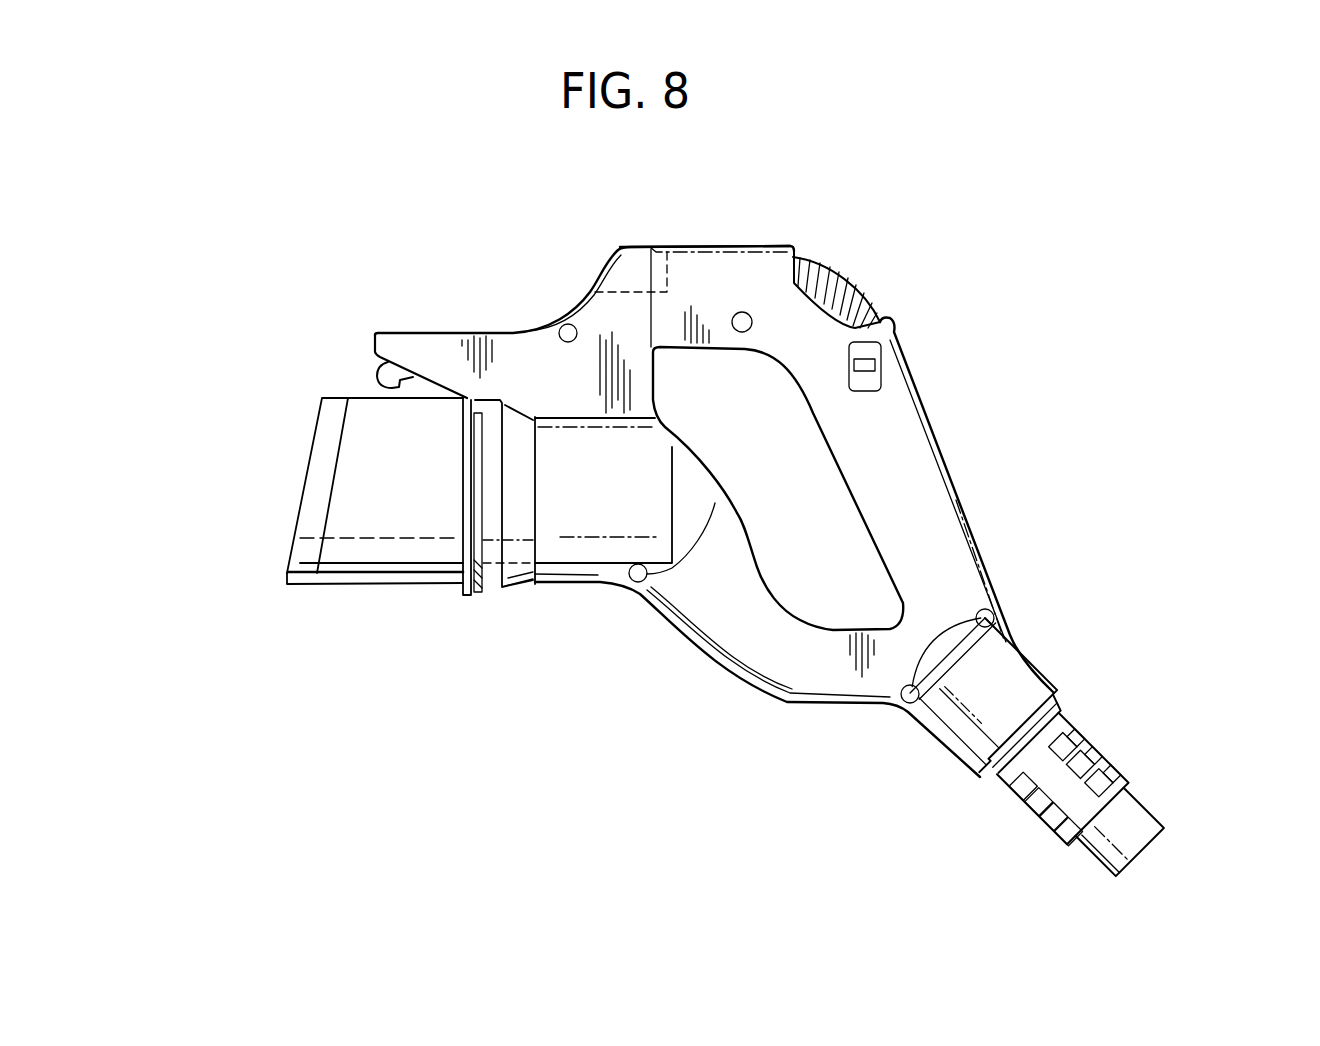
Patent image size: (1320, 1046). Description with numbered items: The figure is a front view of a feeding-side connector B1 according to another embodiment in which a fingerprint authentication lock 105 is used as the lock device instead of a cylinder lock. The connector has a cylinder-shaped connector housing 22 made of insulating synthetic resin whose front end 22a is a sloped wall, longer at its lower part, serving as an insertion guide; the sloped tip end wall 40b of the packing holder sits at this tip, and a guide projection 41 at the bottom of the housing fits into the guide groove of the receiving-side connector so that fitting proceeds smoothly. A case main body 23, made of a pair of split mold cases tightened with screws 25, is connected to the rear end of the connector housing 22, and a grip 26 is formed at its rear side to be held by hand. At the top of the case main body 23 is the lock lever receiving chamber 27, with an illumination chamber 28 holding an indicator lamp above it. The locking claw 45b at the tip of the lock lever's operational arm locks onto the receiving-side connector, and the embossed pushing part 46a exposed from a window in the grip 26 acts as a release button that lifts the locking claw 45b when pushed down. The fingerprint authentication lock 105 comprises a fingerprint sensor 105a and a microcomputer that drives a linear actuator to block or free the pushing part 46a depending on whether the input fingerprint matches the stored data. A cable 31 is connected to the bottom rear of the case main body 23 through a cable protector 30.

The feeding-side connector B1 is at (685, 183).
The lock lever receiving chamber 27 is at (753, 245).
The illumination chamber 28 is at (608, 276).
The pushing part 46a is at (840, 278).
The fingerprint authentication lock 105 is at (881, 353).
The fingerprint sensor 105a is at (876, 366).
The grip 26 is at (930, 460).
The screws 25 is at (743, 332).
The case main body 23 is at (713, 654).
The connector housing 22 is at (403, 587).
The front end 22a is at (312, 547).
The guide projection 41 is at (340, 583).
The tip end wall 40b is at (302, 517).
The locking claw 45b is at (376, 379).
The cable protector 30 is at (1097, 753).
The cable 31 is at (1133, 823).